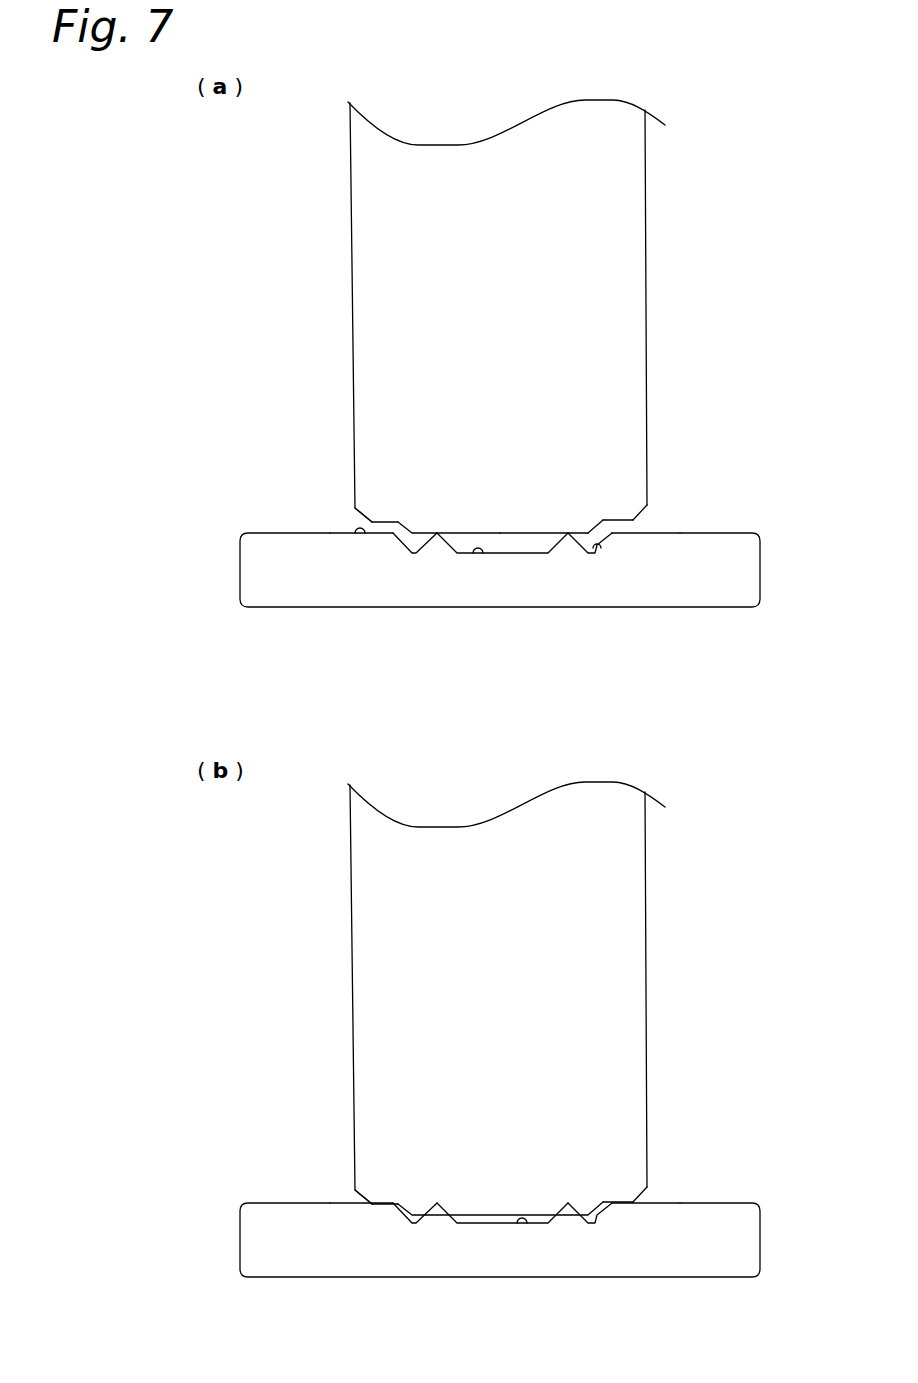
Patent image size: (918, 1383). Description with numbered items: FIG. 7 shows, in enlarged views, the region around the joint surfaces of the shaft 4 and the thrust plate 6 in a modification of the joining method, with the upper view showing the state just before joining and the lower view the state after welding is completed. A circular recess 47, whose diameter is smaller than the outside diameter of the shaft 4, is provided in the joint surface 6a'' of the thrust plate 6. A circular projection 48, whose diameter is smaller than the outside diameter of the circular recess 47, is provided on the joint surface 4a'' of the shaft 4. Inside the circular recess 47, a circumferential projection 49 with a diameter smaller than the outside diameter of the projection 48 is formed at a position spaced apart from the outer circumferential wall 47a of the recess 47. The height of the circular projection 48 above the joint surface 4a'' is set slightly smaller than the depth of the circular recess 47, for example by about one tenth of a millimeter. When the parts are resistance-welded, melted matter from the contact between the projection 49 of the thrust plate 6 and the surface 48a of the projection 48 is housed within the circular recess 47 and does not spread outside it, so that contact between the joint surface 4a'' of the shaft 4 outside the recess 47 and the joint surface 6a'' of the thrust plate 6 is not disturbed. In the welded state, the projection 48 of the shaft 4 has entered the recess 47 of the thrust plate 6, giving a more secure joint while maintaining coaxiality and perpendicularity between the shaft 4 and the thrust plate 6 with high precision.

The shaft 4 is at (618, 205).
The circular projection 48 is at (466, 527).
The surface of the projection 48a is at (533, 533).
The joint surface of the shaft 4a'' is at (500, 805).
The thrust plate 6 is at (686, 587).
The joint surface of the thrust plate 6a'' is at (491, 865).
The circumferential projection 49 is at (437, 535).
The circular recess 47 is at (480, 550).
The outer circumferential wall of the recess 47a is at (595, 553).